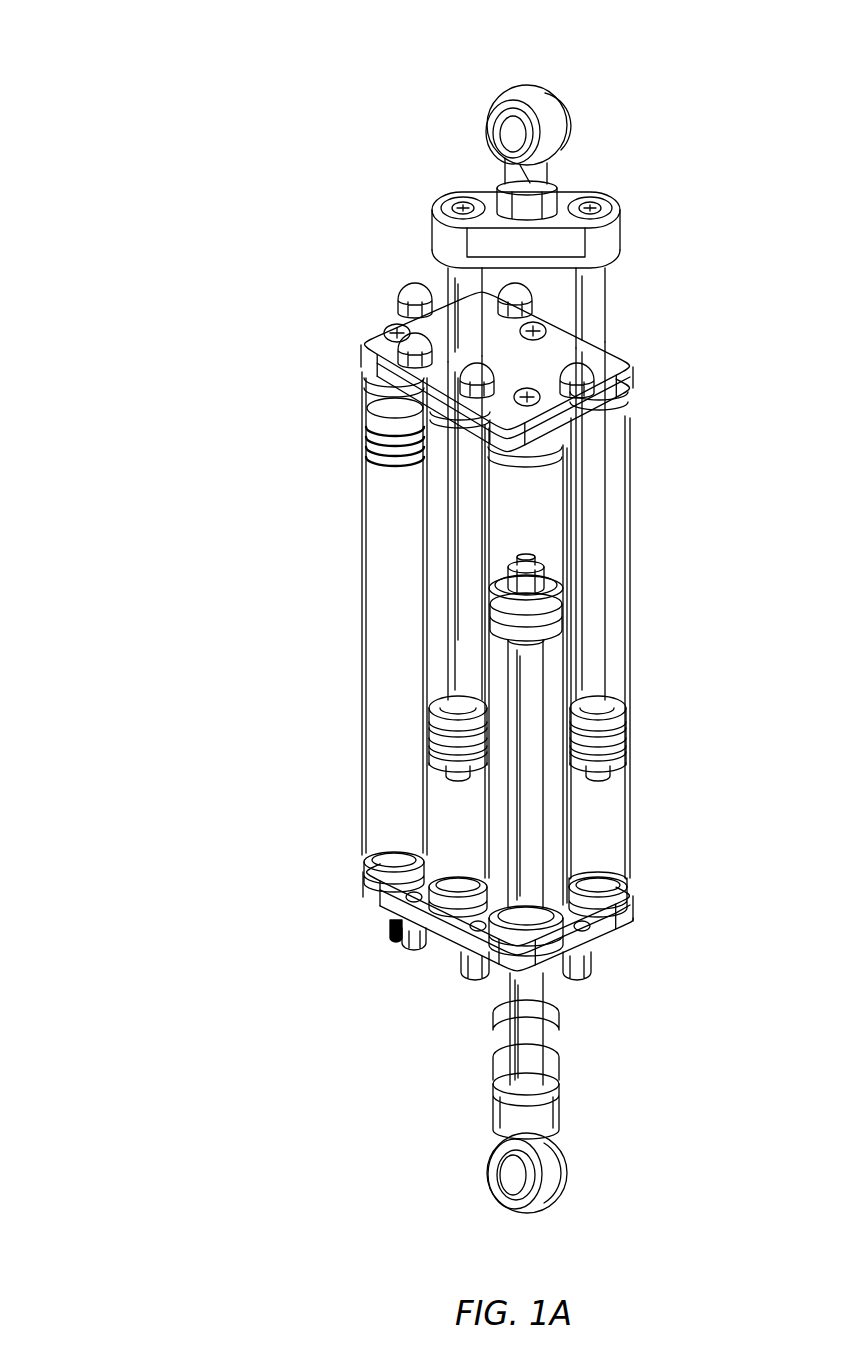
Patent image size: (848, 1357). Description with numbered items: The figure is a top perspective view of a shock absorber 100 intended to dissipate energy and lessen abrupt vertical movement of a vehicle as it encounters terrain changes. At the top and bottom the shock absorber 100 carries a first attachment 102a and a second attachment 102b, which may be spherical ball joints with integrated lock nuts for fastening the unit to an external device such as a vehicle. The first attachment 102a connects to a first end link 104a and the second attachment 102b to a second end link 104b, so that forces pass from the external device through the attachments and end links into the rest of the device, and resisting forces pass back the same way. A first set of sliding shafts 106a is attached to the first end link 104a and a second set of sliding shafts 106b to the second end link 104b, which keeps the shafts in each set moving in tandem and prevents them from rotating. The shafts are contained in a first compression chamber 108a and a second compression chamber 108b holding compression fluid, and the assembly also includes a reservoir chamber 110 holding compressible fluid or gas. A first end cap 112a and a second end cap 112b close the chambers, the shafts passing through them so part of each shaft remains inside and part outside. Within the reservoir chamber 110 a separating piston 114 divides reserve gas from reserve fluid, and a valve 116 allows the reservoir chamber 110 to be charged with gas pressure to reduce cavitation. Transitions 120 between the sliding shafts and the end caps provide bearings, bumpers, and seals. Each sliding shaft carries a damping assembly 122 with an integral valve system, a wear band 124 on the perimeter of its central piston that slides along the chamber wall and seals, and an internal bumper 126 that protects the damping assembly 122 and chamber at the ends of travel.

The shock absorber 100 is at (130, 82).
The first attachment 102a is at (500, 91).
The second attachment 102b is at (567, 1188).
The first end link 104a is at (570, 242).
The second end link 104b is at (543, 1117).
The first set of sliding shafts 106a is at (596, 302).
The second set of sliding shafts 106b is at (537, 1035).
The first compression chamber 108a is at (600, 806).
The second compression chamber 108b is at (545, 491).
The reservoir chamber 110 is at (383, 593).
The first end cap 112a is at (607, 397).
The second end cap 112b is at (605, 934).
The separating piston 114 is at (388, 415).
The valve 116 is at (398, 932).
The transition 120 is at (626, 884).
The damping assembly 122 is at (556, 583).
The wear band 124 is at (560, 614).
The internal bumper 126 is at (612, 706).